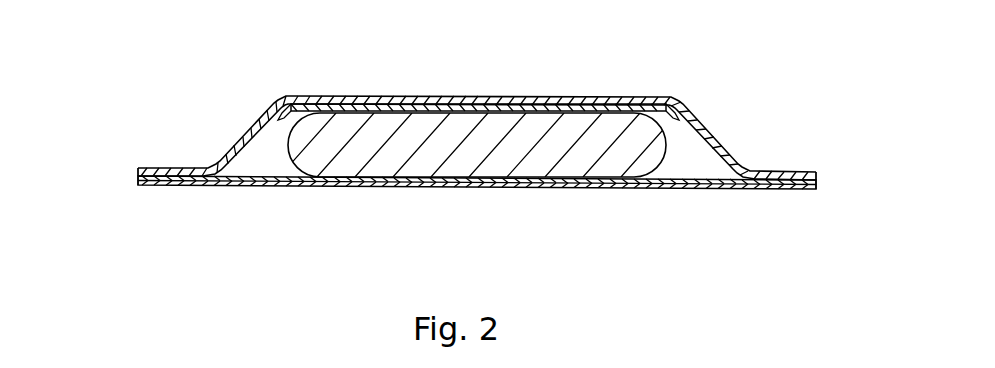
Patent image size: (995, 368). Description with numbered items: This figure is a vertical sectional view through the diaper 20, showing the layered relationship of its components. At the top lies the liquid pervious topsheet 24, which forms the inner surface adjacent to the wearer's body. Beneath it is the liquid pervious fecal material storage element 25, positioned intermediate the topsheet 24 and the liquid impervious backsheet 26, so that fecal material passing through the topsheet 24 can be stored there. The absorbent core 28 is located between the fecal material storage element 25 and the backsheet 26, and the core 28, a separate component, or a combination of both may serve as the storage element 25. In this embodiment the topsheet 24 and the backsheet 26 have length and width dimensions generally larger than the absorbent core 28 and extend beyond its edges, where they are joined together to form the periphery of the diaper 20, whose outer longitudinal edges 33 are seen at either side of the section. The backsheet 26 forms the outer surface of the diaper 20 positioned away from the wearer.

The diaper 20 is at (462, 150).
The topsheet 24 is at (438, 97).
The fecal material storage element 25 is at (498, 106).
The backsheet 26 is at (508, 187).
The absorbent core 28 is at (582, 158).
The longitudinal edges 33 is at (138, 175).